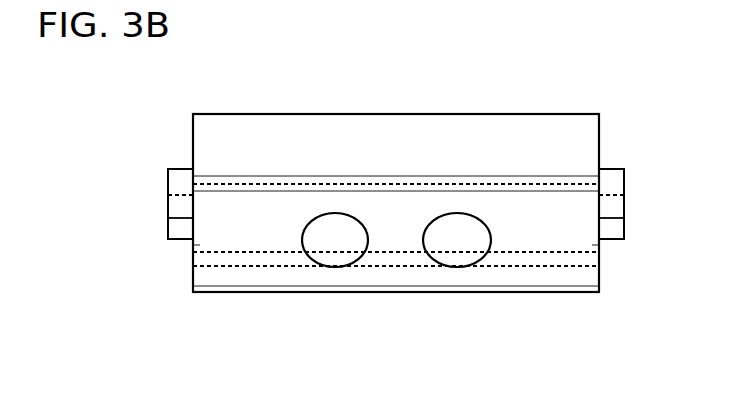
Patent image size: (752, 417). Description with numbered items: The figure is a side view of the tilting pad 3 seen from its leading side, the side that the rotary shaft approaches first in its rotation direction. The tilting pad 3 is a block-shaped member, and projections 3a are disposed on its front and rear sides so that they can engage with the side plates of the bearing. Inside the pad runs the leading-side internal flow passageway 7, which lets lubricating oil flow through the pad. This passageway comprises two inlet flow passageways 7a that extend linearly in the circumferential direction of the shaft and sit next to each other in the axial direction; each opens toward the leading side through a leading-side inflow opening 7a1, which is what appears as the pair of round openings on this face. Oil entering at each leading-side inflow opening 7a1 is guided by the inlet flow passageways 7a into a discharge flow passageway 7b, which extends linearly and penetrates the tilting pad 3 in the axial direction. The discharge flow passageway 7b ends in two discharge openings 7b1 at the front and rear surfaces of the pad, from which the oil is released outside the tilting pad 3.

The tilting pad 3 is at (493, 97).
The projections 3a is at (177, 169).
The leading-side internal flow passageway 7 is at (398, 159).
The inlet flow passageways 7a is at (334, 248).
The leading-side inflow opening 7a1 is at (331, 213).
The discharge flow passageway 7b is at (258, 253).
The discharge openings 7b1 is at (193, 245).